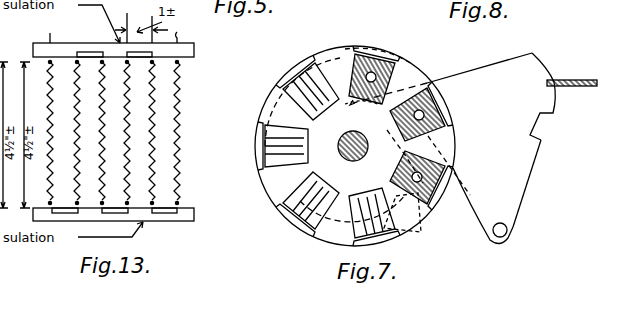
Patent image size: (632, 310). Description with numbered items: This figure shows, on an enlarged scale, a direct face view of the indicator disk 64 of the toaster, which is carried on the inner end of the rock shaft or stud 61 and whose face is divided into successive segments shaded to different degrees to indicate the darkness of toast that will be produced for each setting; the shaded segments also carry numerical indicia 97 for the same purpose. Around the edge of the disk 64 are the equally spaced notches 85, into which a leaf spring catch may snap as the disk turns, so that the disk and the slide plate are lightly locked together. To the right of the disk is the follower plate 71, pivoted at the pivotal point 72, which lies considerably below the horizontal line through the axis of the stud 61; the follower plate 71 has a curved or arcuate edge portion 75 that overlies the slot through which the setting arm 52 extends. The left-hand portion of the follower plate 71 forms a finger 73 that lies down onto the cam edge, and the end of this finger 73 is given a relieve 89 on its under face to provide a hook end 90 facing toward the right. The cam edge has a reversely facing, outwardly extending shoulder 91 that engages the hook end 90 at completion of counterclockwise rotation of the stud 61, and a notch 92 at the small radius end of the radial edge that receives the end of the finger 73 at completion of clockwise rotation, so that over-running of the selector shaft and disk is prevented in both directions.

The setting arm 52 is at (575, 80).
The rock shaft or stud 61 is at (340, 152).
The indicator disk 64 is at (282, 110).
The follower plate 71 is at (505, 165).
The pivotal point 72 is at (507, 229).
The finger 73 is at (428, 82).
The curved edge portion 75 is at (540, 62).
The notches 85 is at (288, 72).
The relieve 89 is at (366, 150).
The hook end 90 is at (368, 108).
The shoulder 91 is at (337, 47).
The notch 92 is at (349, 104).
The numerical indicia 97 is at (428, 116).